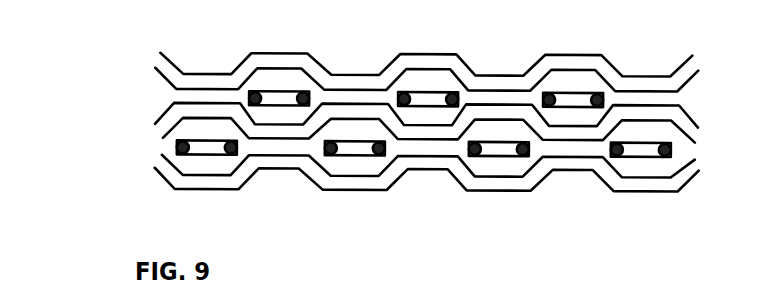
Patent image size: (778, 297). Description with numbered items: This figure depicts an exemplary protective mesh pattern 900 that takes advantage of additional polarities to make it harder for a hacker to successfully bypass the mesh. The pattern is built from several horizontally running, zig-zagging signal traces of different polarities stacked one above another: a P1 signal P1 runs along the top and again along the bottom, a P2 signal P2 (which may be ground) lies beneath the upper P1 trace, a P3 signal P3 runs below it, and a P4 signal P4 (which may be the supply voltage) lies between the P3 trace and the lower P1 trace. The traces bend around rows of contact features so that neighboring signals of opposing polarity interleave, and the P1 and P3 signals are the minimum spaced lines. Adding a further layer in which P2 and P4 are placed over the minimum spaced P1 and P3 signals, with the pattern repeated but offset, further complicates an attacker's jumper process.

The protective mesh pattern 900 is at (730, 38).
The P1 signal P1 is at (406, 123).
The P2 signal P2 is at (363, 104).
The P3 signal P3 is at (403, 129).
The P4 signal P4 is at (362, 159).